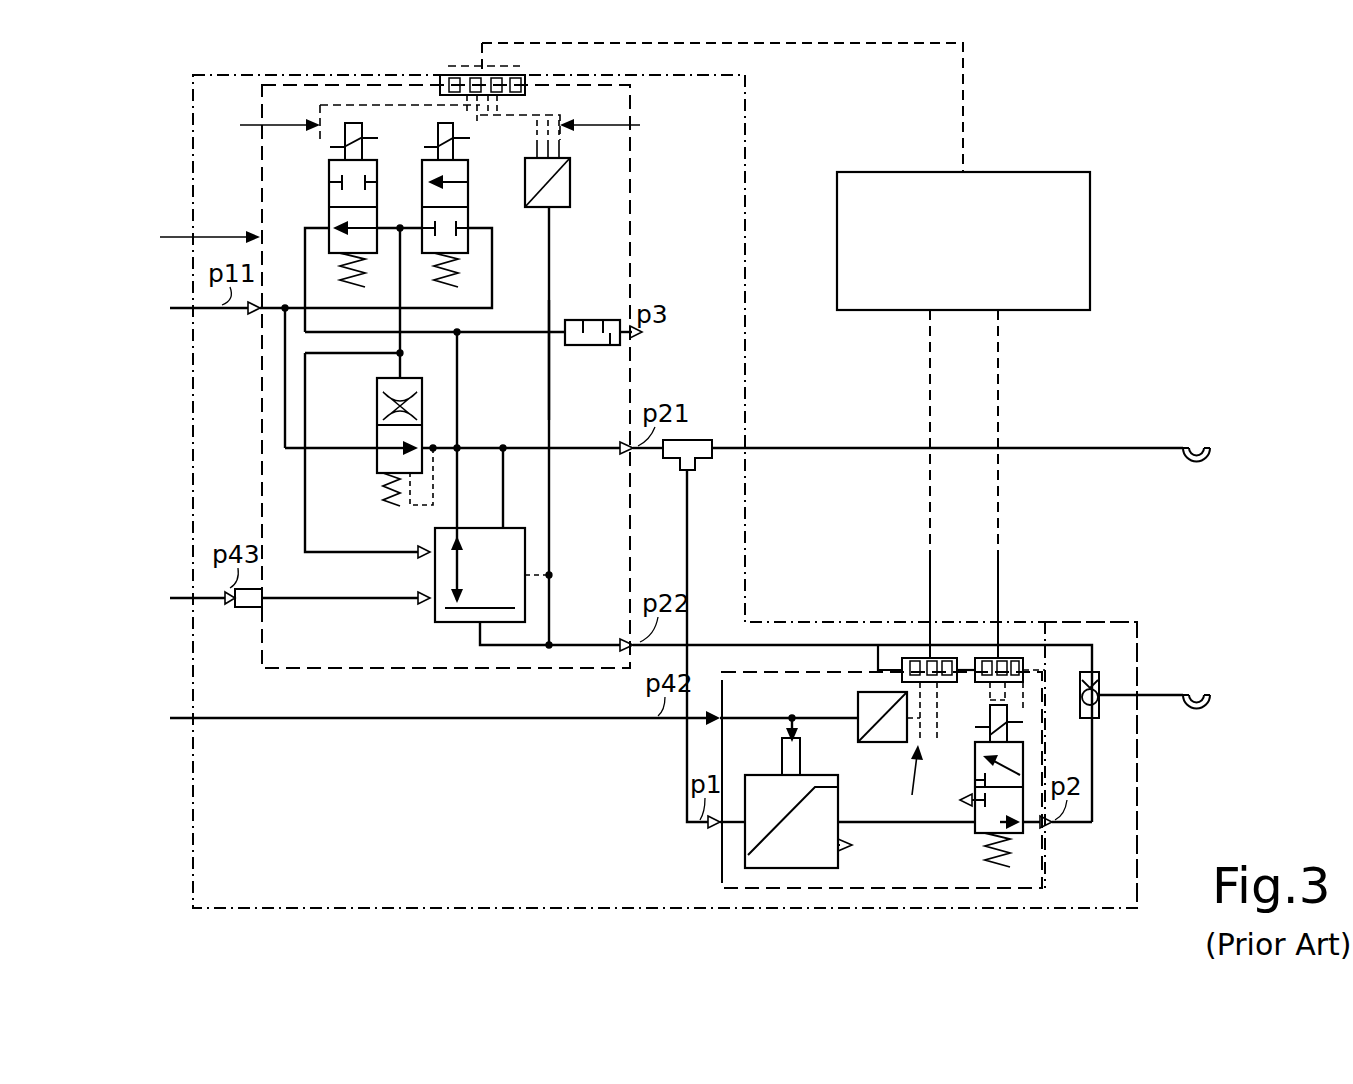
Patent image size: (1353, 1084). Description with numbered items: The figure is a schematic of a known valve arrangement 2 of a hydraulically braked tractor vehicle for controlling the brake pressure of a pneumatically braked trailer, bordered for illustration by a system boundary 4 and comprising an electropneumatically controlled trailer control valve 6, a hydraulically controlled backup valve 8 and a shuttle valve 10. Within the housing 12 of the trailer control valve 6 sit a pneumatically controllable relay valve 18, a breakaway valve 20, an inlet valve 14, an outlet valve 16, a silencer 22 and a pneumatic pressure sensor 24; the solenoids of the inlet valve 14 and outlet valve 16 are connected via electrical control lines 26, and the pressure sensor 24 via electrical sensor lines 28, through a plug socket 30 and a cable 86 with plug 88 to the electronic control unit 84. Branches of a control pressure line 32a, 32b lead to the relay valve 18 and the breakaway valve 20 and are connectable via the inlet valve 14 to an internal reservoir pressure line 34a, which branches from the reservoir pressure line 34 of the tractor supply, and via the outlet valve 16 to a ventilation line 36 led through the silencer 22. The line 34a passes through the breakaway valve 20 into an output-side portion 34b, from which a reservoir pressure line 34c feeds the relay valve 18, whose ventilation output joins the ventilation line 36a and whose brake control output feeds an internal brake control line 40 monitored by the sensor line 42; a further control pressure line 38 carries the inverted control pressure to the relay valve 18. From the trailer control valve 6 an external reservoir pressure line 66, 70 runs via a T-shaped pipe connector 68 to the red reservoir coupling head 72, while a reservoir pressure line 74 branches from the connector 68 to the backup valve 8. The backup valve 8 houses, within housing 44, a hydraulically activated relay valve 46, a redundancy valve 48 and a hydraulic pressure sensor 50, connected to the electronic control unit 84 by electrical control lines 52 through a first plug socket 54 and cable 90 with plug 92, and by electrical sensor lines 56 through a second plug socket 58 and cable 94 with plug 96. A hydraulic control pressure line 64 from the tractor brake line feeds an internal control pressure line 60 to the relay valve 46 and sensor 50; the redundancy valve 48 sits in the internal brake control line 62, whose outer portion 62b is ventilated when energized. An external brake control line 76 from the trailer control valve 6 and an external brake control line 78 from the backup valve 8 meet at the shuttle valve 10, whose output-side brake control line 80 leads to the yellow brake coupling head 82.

The valve arrangement 2 is at (125, 132).
The system boundary 4 is at (747, 485).
The trailer control valve 6 is at (195, 237).
The backup valve 8 is at (722, 762).
The shuttle valve 10 is at (1101, 690).
The housing 12 is at (260, 455).
The inlet valve 14 is at (470, 192).
The outlet valve 16 is at (327, 198).
The relay valve 18 is at (433, 583).
The breakaway valve 20 is at (375, 422).
The silencer 22 is at (601, 318).
The pneumatic pressure sensor 24 is at (572, 185).
The electrical control lines 26 is at (264, 125).
The electrical sensor lines 28 is at (627, 125).
The plug socket 30 is at (447, 82).
The control pressure line branch 32a is at (400, 330).
The control pressure line branch 32b is at (308, 520).
The reservoir pressure line 34 is at (494, 272).
The internal reservoir pressure line 34a is at (283, 395).
The output-side portion of the reservoir pressure line 34b is at (586, 446).
The reservoir pressure line 34c is at (505, 489).
The ventilation line 36 is at (496, 338).
The ventilation line 36a is at (459, 425).
The further control pressure line 38 is at (345, 600).
The internal brake control line 40 is at (575, 642).
The sensor line 42 is at (551, 372).
The housing 44 is at (722, 862).
The relay valve 46 is at (820, 773).
The redundancy valve 48 is at (930, 770).
The hydraulic pressure sensor 50 is at (870, 745).
The electrical control lines 52 is at (1040, 717).
The first plug socket 54 is at (1025, 655).
The electrical sensor lines 56 is at (912, 745).
The second plug socket 58 is at (960, 655).
The internal hydraulic control pressure line 60 is at (855, 715).
The internal brake control line 62 is at (920, 825).
The outer portion of the brake control line 62b is at (1030, 825).
The control pressure line 64 is at (412, 720).
The external reservoir pressure line 66 is at (637, 452).
The pipe connector 68 is at (693, 438).
The external reservoir pressure line 70 is at (830, 445).
The coupling head "reservoir" 72 is at (1198, 465).
The reservoir pressure line 74 is at (690, 550).
The external brake control line 76 is at (880, 652).
The external brake control line 78 is at (1095, 790).
The output-side brake control line 80 is at (1153, 690).
The coupling head "brake" 82 is at (1197, 712).
The electronic control unit 84 is at (1092, 240).
The cable 86 is at (965, 112).
The plug 88 is at (515, 72).
The cable 90 is at (1001, 375).
The plug 92 is at (1002, 655).
The cable 94 is at (932, 378).
The plug 96 is at (942, 655).